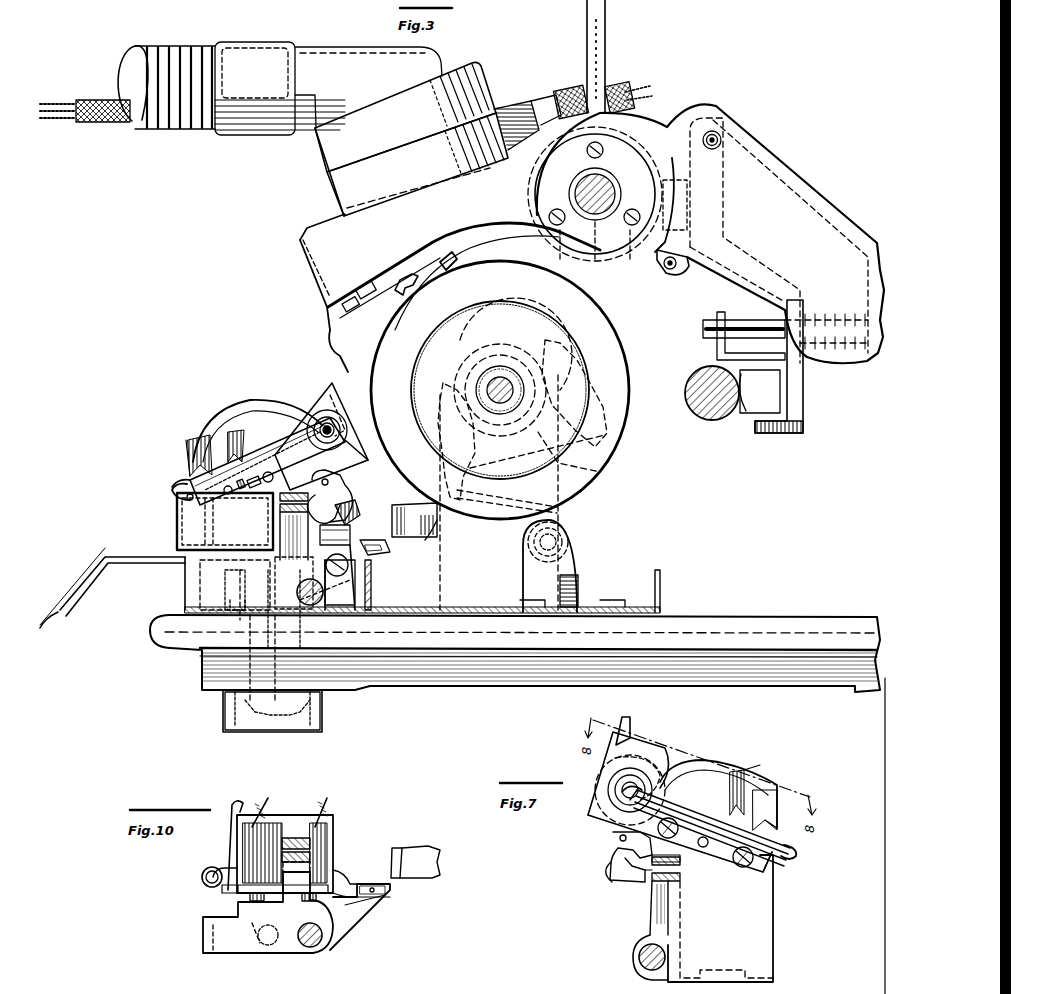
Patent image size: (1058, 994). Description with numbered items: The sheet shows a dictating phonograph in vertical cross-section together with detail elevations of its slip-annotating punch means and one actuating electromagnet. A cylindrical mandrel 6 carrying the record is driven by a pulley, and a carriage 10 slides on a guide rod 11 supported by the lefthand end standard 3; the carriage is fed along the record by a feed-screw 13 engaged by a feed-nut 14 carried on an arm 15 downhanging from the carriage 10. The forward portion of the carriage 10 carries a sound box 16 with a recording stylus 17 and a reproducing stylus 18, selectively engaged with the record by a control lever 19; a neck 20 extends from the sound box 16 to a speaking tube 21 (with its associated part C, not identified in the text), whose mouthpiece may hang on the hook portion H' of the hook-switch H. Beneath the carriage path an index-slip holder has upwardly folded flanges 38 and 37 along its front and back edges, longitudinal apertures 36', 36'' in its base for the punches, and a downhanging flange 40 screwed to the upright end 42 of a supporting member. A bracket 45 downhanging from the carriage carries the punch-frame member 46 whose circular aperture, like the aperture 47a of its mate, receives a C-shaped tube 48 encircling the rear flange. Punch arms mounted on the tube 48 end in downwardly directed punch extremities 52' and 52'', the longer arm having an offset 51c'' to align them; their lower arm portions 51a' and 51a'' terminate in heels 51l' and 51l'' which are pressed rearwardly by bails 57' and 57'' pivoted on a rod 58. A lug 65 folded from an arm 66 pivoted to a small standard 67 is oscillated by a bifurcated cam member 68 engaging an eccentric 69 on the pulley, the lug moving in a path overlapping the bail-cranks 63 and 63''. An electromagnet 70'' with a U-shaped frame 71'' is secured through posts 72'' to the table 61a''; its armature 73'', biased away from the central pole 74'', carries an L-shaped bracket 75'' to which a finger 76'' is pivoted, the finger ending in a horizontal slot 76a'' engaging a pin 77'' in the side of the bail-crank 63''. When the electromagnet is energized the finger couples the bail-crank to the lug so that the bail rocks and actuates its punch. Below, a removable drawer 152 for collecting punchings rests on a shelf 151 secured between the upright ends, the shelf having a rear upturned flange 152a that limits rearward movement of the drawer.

In FIG. 3, the cable C is at (97, 103).
In FIG. 3, the speaking tube 21 is at (173, 128).
In FIG. 3, the neck 20 is at (338, 60).
In FIG. 3, the sound box 16 is at (324, 224).
In FIG. 3, the control lever 19 is at (606, 48).
In FIG. 3, the carriage 10 is at (824, 191).
In FIG. 3, the guide rod 11 is at (603, 215).
In FIG. 3, the recording stylus 17 is at (455, 266).
In FIG. 3, the reproducing stylus 18 is at (418, 286).
In FIG. 3, the cylindrical mandrel 6 is at (575, 356).
In FIG. 3, the bifurcated cam member 68 is at (604, 437).
In FIG. 3, the eccentric 69 is at (600, 472).
In FIG. 3, the arm 15 is at (803, 388).
In FIG. 3, the feed-screw 13 is at (718, 414).
In FIG. 3, the feed-nut 14 is at (760, 410).
In FIG. 3, the bracket 45 is at (330, 348).
In FIG. 7, the bracket 45 is at (631, 720).
In FIG. 3, the punch-frame member 46 is at (332, 388).
In FIG. 3, the flange 37 is at (338, 423).
In FIG. 7, the flange 37 is at (612, 783).
In FIG. 3, the circular aperture 47a is at (340, 430).
In FIG. 7, the circular aperture 47a is at (622, 792).
In FIG. 3, the tube 48 is at (352, 444).
In FIG. 7, the tube 48 is at (645, 770).
In FIG. 3, the longitudinal aperture 36' is at (266, 461).
In FIG. 7, the longitudinal aperture 36' is at (710, 828).
In FIG. 3, the longitudinal aperture 36'' is at (166, 465).
In FIG. 3, the flange 38 is at (178, 484).
In FIG. 7, the flange 38 is at (797, 852).
In FIG. 3, the punch extremity 52' is at (255, 436).
In FIG. 7, the punch extremity 52' is at (718, 785).
In FIG. 3, the punch extremity 52'' is at (167, 450).
In FIG. 7, the punch extremity 52'' is at (804, 797).
In FIG. 3, the bail 57'' is at (296, 485).
In FIG. 7, the bail 57'' is at (693, 882).
In FIG. 10, the bail 57'' is at (292, 817).
In FIG. 3, the lower arm portion 51a'' is at (343, 496).
In FIG. 7, the lower arm portion 51a'' is at (602, 857).
In FIG. 3, the lower arm portion 51a' is at (348, 510).
In FIG. 7, the lower arm portion 51a' is at (599, 880).
In FIG. 3, the bail 57' is at (294, 536).
In FIG. 7, the bail 57' is at (685, 911).
In FIG. 3, the armature 73'' is at (357, 530).
In FIG. 10, the armature 73'' is at (205, 845).
In FIG. 3, the horizontal slot 76a'' is at (397, 552).
In FIG. 10, the horizontal slot 76a'' is at (401, 901).
In FIG. 3, the bail-crank 63 is at (342, 577).
In FIG. 3, the removable drawer 152 is at (176, 530).
In FIG. 3, the rear upturned flange 152a is at (225, 536).
In FIG. 3, the shelf 151 is at (180, 554).
In FIG. 3, the hook portion H' is at (90, 594).
In FIG. 3, the lefthand end standard 3 is at (515, 644).
In FIG. 3, the hook-switch H is at (246, 713).
In FIG. 3, the rod 58 is at (313, 602).
In FIG. 7, the rod 58 is at (667, 958).
In FIG. 3, the lug 65 is at (392, 505).
In FIG. 10, the lug 65 is at (398, 848).
In FIG. 3, the arm 66 is at (437, 530).
In FIG. 10, the arm 66 is at (428, 846).
In FIG. 3, the small standard 67 is at (577, 572).
In FIG. 7, the upright end 42 is at (774, 910).
In FIG. 7, the flange 40 is at (765, 872).
In FIG. 7, the offset 51c'' is at (772, 762).
In FIG. 7, the heel 51l' is at (617, 892).
In FIG. 7, the heel 51l'' is at (689, 870).
In FIG. 10, the bail-crank 63'' is at (296, 916).
In FIG. 10, the electromagnet 70'' is at (311, 840).
In FIG. 10, the U-shaped frame 71'' is at (350, 797).
In FIG. 10, the central pole 74'' is at (194, 866).
In FIG. 10, the L-shaped bracket 75'' is at (166, 877).
In FIG. 10, the table 61a'' is at (197, 880).
In FIG. 10, the posts 72'' is at (284, 909).
In FIG. 10, the finger 76'' is at (361, 867).
In FIG. 10, the pin 77'' is at (374, 877).